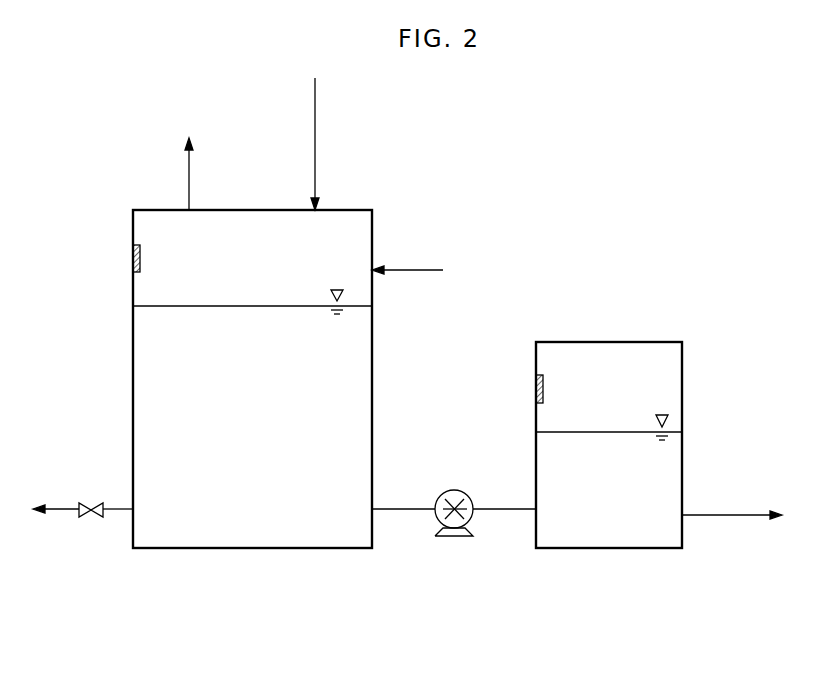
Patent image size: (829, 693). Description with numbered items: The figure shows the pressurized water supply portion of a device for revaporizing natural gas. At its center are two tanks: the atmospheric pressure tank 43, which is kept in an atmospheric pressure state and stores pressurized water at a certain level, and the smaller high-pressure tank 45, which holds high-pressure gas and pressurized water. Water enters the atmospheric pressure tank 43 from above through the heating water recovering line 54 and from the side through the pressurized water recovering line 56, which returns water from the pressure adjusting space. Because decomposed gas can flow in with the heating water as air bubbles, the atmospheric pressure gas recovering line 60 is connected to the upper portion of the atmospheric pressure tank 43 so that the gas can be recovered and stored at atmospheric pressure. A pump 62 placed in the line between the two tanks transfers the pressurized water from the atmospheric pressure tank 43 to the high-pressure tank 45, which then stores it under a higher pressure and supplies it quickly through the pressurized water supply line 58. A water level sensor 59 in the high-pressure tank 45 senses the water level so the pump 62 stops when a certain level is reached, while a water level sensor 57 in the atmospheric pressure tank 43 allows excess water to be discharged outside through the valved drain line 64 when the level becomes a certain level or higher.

The atmospheric pressure tank 43 is at (373, 223).
The high-pressure tank 45 is at (682, 361).
The heating water recovering line 54 is at (316, 134).
The pressurized water recovering line 56 is at (425, 271).
The water level sensor 57 is at (130, 257).
The pressurized water supply line 58 is at (731, 516).
The water level sensor 59 is at (534, 383).
The atmospheric pressure gas recovering line 60 is at (186, 173).
The pump 62 is at (454, 537).
The drain line 64 is at (62, 509).